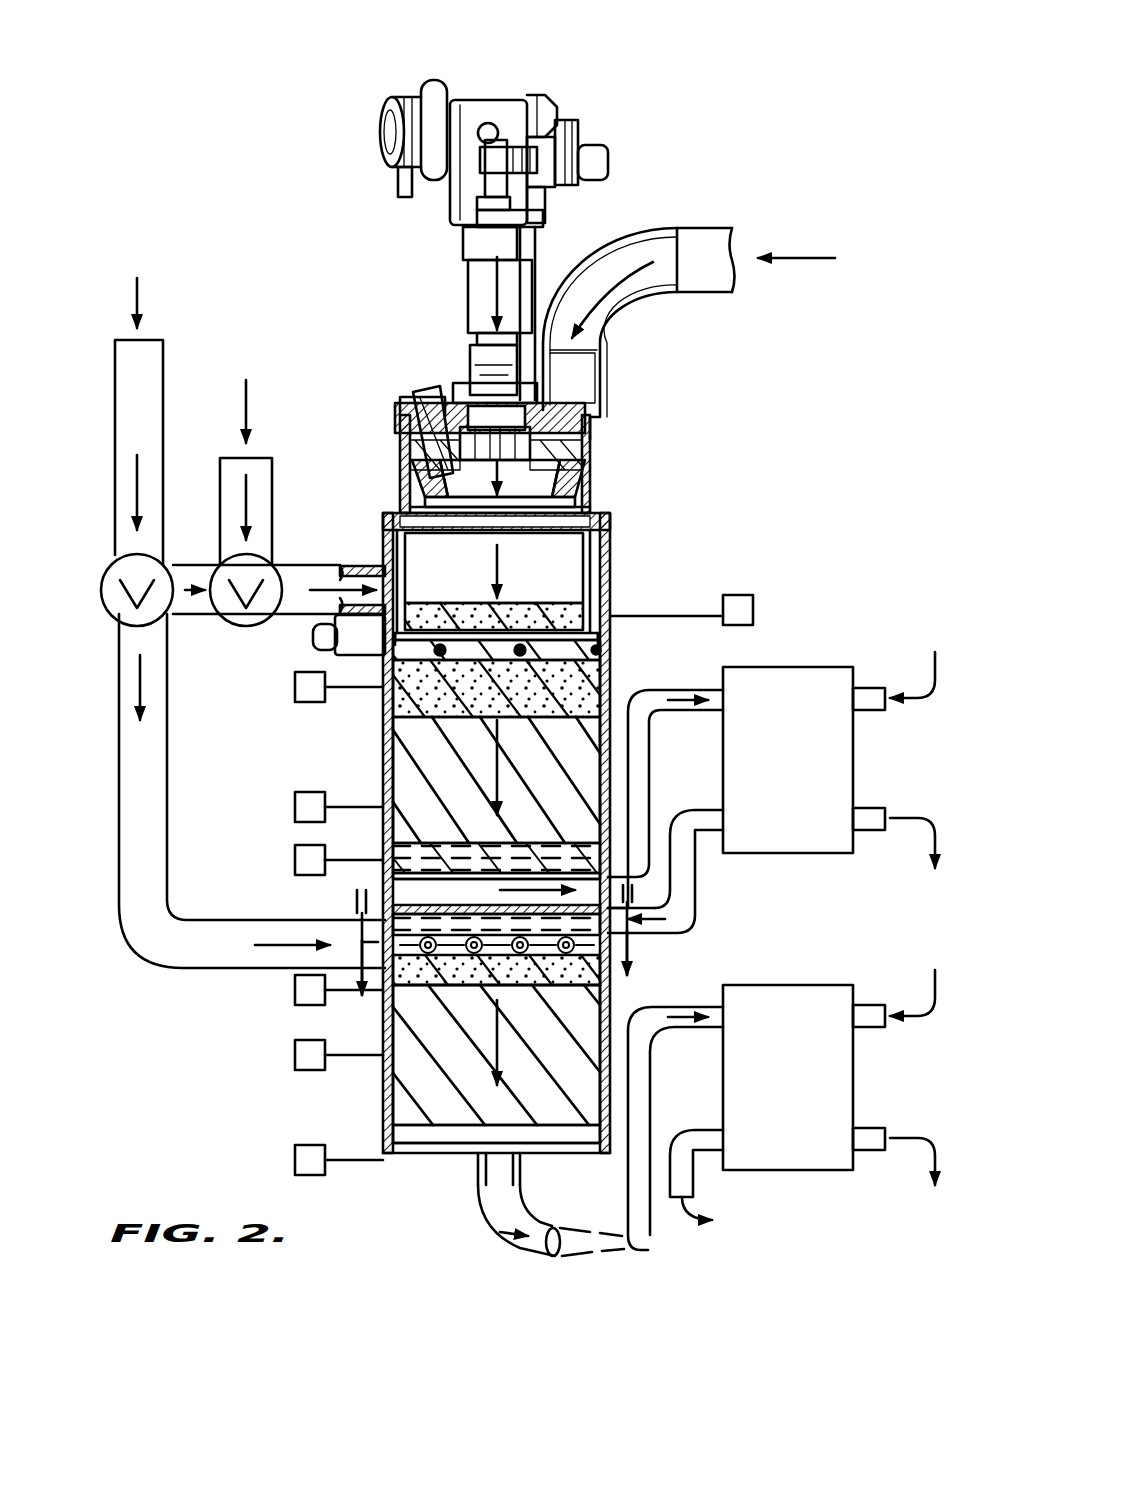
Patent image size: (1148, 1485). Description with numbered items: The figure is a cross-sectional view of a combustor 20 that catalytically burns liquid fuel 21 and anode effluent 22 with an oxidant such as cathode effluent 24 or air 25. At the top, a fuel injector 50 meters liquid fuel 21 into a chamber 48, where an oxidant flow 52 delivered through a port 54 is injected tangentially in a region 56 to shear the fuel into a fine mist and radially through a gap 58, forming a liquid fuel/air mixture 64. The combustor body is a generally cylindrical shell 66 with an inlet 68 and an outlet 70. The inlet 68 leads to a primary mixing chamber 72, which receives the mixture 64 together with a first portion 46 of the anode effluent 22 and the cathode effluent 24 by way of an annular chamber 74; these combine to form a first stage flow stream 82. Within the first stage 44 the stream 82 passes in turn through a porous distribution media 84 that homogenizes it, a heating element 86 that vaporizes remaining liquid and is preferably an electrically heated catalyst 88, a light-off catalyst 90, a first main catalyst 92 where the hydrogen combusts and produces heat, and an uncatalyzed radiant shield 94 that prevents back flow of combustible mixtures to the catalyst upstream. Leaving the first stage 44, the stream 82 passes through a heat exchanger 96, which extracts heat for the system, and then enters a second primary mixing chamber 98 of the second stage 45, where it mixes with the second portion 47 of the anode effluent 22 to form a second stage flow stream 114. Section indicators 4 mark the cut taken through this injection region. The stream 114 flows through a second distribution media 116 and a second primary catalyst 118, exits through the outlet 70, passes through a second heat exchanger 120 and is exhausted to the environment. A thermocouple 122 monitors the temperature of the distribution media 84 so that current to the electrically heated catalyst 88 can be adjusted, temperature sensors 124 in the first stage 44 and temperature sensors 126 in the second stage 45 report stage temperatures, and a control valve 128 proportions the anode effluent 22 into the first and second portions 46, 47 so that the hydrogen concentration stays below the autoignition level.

The section line 4- 4 is at (501, 955).
The combustor 20 is at (667, 128).
The liquid fuel 21 is at (496, 290).
The anode effluent 22 is at (140, 288).
The cathode effluent 24 is at (250, 397).
The air flow 25 is at (790, 255).
The first stage 44 is at (262, 757).
The second stage 45 is at (258, 1066).
The first portion 46 is at (192, 602).
The second portion 47 is at (142, 688).
The chamber 48 is at (440, 487).
The fuel injector 50 is at (460, 356).
The oxidant flow 52 is at (625, 250).
The port 54 is at (567, 410).
The region 56 is at (600, 437).
The gap 58 is at (588, 515).
The liquid fuel/air mixture 64 is at (562, 490).
The cylindrical shell 66 is at (607, 534).
The inlet 68 is at (372, 513).
The outlet 70 is at (515, 1163).
The primary mixing chamber 72 is at (494, 568).
The annular chamber 74 is at (602, 552).
The first stage flow stream 82 is at (496, 575).
The distribution media 84 is at (560, 610).
The heating element 86 is at (606, 646).
The electrically heated catalyst 88 is at (596, 665).
The light-off catalyst 90 is at (398, 708).
The first main catalyst 92 is at (418, 748).
The radiant shield 94 is at (415, 845).
The heat exchanger 96 is at (795, 672).
The second primary mixing chamber 98 is at (437, 868).
The second stage flow stream 114 is at (500, 1046).
The second distribution media 116 is at (590, 995).
The second primary catalyst 118 is at (410, 1096).
The heat exchanger 120 is at (775, 990).
The thermocouple 122 is at (740, 595).
The temperature sensors 124 is at (294, 700).
The temperature sensors 126 is at (294, 1040).
The control valve 128 is at (150, 568).